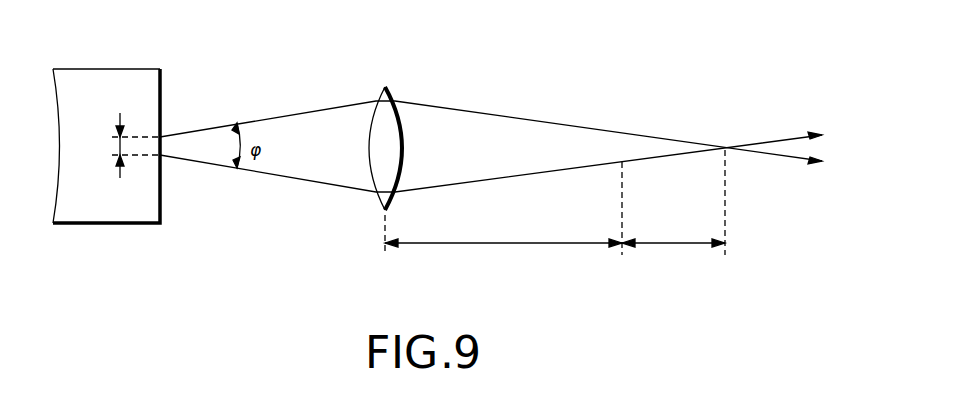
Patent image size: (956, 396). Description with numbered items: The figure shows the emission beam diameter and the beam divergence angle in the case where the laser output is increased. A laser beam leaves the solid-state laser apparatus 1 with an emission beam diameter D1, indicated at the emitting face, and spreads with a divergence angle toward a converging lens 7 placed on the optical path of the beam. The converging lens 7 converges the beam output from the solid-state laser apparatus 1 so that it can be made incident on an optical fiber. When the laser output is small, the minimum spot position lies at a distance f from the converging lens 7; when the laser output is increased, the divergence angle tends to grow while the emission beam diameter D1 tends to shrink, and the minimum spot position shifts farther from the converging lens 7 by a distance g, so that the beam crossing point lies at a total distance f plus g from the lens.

The solid-state laser apparatus 1 is at (126, 69).
The converging lens 7 is at (385, 86).
The emission beam diameter D1 is at (121, 145).
The distance f is at (503, 216).
The distance g is at (673, 210).